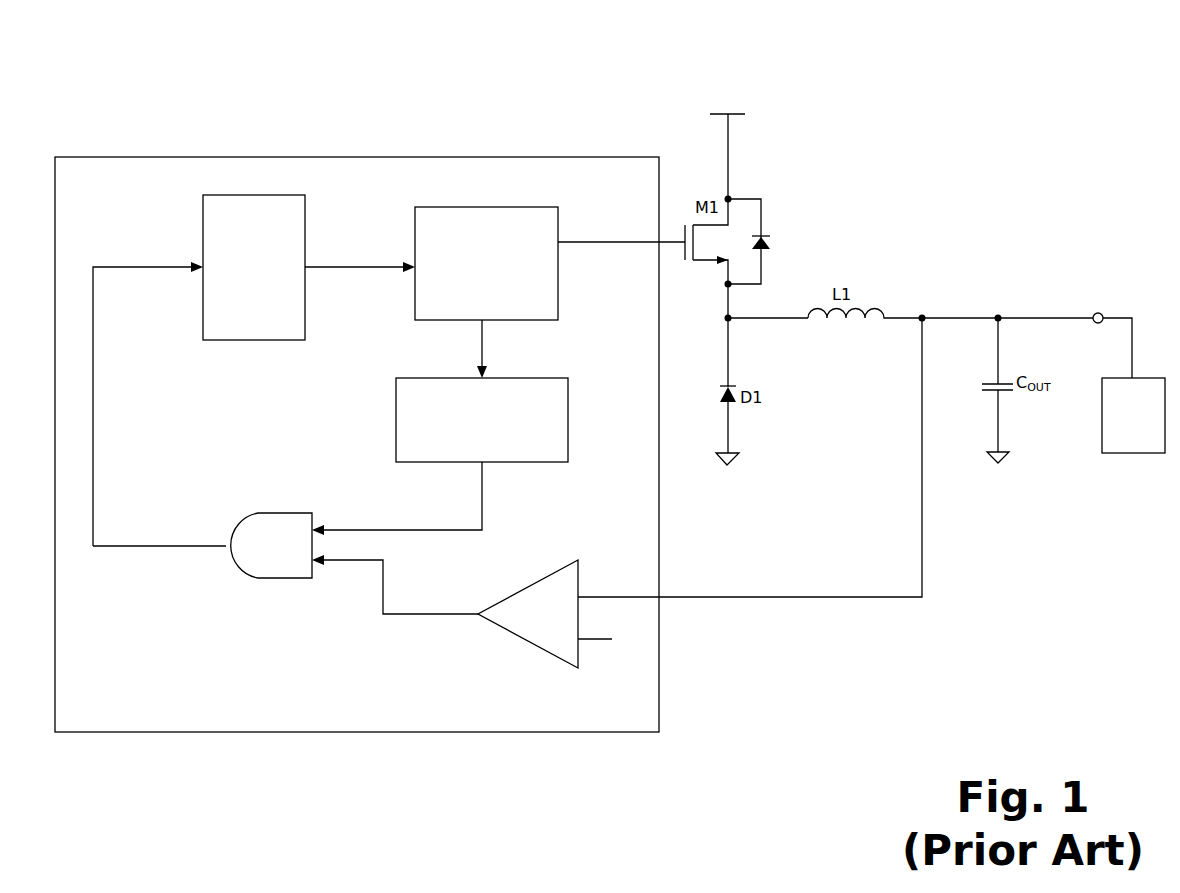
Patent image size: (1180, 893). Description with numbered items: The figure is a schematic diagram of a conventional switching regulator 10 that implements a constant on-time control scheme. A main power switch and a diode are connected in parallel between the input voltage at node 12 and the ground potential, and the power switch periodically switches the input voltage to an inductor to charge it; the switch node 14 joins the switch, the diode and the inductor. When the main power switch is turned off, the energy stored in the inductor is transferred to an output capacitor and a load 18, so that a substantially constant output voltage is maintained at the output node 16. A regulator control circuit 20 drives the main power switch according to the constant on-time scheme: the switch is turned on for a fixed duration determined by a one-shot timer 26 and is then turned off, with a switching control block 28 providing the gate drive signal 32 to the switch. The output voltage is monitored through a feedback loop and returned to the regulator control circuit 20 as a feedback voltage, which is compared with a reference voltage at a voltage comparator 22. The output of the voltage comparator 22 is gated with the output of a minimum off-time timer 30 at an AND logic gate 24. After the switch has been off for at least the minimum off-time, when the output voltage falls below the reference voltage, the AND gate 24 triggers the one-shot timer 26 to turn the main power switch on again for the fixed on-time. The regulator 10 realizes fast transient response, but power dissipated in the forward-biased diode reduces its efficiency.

The switching regulator 10 is at (905, 72).
The input voltage node 12 is at (735, 118).
The switch node VSW 14 is at (730, 322).
The output voltage node 16 is at (920, 322).
The load 18 is at (1132, 455).
The regulator control circuit 20 is at (567, 157).
The voltage comparator 22 is at (512, 636).
The AND logic gate 24 is at (294, 579).
The one-shot timer 26 is at (254, 267).
The switching control 28 is at (486, 263).
The minimum off-time timer 30 is at (482, 420).
The gate drive signal line 32 is at (590, 242).